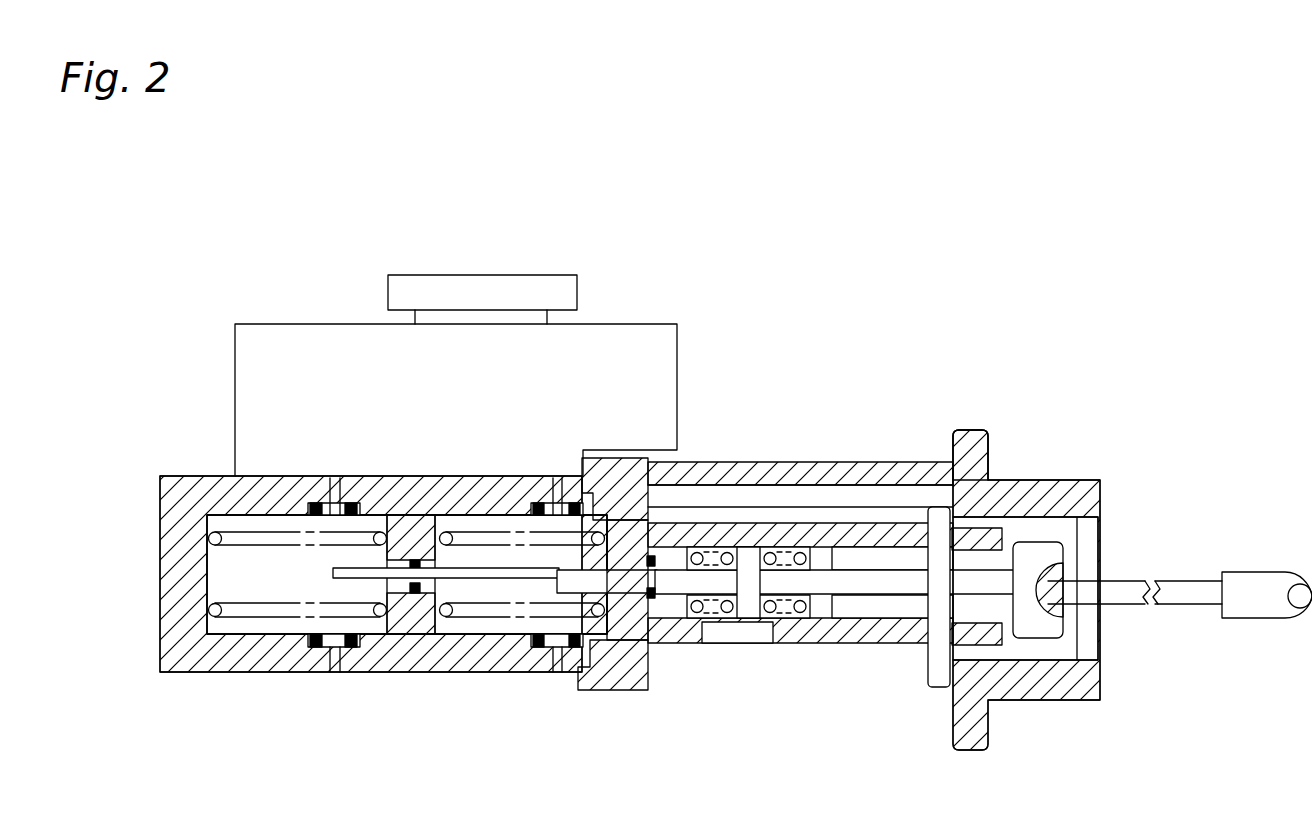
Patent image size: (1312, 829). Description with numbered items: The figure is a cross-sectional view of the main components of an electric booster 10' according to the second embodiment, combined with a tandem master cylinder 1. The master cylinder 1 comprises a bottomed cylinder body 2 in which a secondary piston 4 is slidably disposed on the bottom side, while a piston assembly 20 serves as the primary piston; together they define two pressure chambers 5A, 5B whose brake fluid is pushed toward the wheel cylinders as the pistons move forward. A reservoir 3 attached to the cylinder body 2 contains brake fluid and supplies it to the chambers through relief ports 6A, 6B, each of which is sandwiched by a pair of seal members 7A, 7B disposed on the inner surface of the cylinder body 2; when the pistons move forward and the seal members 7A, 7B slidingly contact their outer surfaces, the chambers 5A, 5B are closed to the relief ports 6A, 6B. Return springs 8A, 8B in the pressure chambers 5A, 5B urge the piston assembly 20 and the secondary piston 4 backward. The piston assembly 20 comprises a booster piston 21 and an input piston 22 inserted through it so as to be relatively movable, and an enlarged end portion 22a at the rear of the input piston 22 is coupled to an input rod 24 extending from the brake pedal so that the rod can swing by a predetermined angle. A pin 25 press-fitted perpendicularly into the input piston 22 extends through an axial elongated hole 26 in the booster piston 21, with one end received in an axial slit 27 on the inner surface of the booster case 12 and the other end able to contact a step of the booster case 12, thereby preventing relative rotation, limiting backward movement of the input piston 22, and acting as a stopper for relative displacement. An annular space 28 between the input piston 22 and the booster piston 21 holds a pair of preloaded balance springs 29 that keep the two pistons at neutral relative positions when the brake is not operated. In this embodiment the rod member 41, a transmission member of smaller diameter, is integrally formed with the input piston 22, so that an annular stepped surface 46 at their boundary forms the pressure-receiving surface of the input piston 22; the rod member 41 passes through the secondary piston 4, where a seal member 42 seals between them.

The tandem master cylinder 1 is at (178, 348).
The cylinder body 2 is at (166, 500).
The reservoir 3 is at (262, 332).
The secondary piston 4 is at (415, 500).
The primary pressure chamber 5A is at (466, 630).
The secondary pressure chamber 5B is at (256, 628).
The relief port 6A is at (548, 504).
The relief port 6B is at (332, 504).
The seal member 7A is at (572, 504).
The seal member 7B is at (352, 504).
The return spring 8A is at (483, 528).
The return spring 8B is at (240, 530).
The electric booster 10' is at (891, 273).
The booster case 12 is at (904, 462).
The piston assembly 20 is at (805, 400).
The booster piston 21 is at (712, 528).
The input piston 22 is at (773, 586).
The enlarged end portion 22a is at (748, 636).
The input rod 24 is at (1192, 582).
The pin 25 is at (934, 682).
The axial elongated hole 26 is at (990, 478).
The axial slit 27 is at (964, 468).
The annular space 28 is at (797, 554).
The balance springs 29 is at (694, 612).
The rod member 41 is at (332, 571).
The seal member 42 is at (417, 634).
The annular stepped surface 46 is at (540, 594).